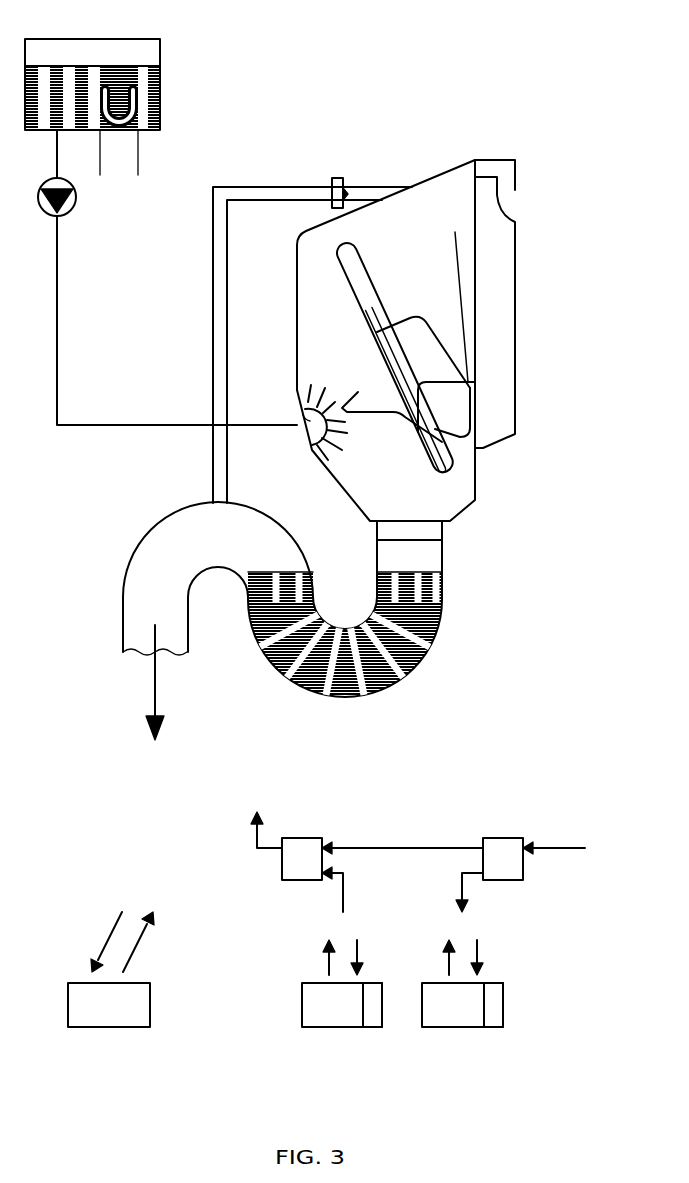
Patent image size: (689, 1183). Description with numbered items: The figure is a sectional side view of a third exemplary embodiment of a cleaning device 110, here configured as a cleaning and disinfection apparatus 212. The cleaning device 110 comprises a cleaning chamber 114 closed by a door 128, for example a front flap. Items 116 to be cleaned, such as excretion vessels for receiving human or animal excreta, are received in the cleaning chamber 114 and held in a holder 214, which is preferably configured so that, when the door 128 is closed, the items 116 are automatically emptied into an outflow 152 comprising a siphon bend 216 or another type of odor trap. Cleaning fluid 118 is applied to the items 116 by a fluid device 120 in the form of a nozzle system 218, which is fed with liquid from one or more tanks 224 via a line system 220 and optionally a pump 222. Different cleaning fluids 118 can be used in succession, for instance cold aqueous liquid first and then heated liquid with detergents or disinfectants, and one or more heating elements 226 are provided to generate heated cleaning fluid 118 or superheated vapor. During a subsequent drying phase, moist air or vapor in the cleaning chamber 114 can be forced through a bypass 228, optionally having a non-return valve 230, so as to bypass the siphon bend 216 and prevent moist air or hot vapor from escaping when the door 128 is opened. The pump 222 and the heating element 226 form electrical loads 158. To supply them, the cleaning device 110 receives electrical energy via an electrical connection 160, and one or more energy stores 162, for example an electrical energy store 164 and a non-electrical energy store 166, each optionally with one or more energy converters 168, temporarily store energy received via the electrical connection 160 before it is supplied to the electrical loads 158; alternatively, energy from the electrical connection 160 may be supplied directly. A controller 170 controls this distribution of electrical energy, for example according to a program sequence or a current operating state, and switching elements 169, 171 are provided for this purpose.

The cleaning device 110 is at (441, 284).
The cleaning and disinfection apparatus 212 is at (441, 284).
The cleaning chamber 114 is at (421, 180).
The door 128 is at (516, 246).
The items to be cleaned 116 is at (425, 338).
The holder 214 is at (433, 425).
The fluid device 120 is at (343, 417).
The nozzle system 218 is at (297, 419).
The cleaning fluid 118 is at (124, 80).
The tank 224 is at (160, 46).
The electrical loads 158 is at (162, 132).
The heating element 226 is at (143, 103).
The pump 222 is at (72, 208).
The line system 220 is at (57, 333).
The bypass 228 is at (208, 477).
The non-return valve 230 is at (332, 180).
The outflow 152 is at (123, 620).
The siphon bend 216 is at (365, 677).
The switching element 171 is at (305, 848).
The switching element 169 is at (503, 848).
The electrical connection 160 is at (566, 843).
The controller 170 is at (119, 1017).
The energy store 162 is at (402, 983).
The electrical energy store 164 is at (360, 1017).
The non-electrical energy store 166 is at (480, 1017).
The energy converter 168 is at (367, 1028).